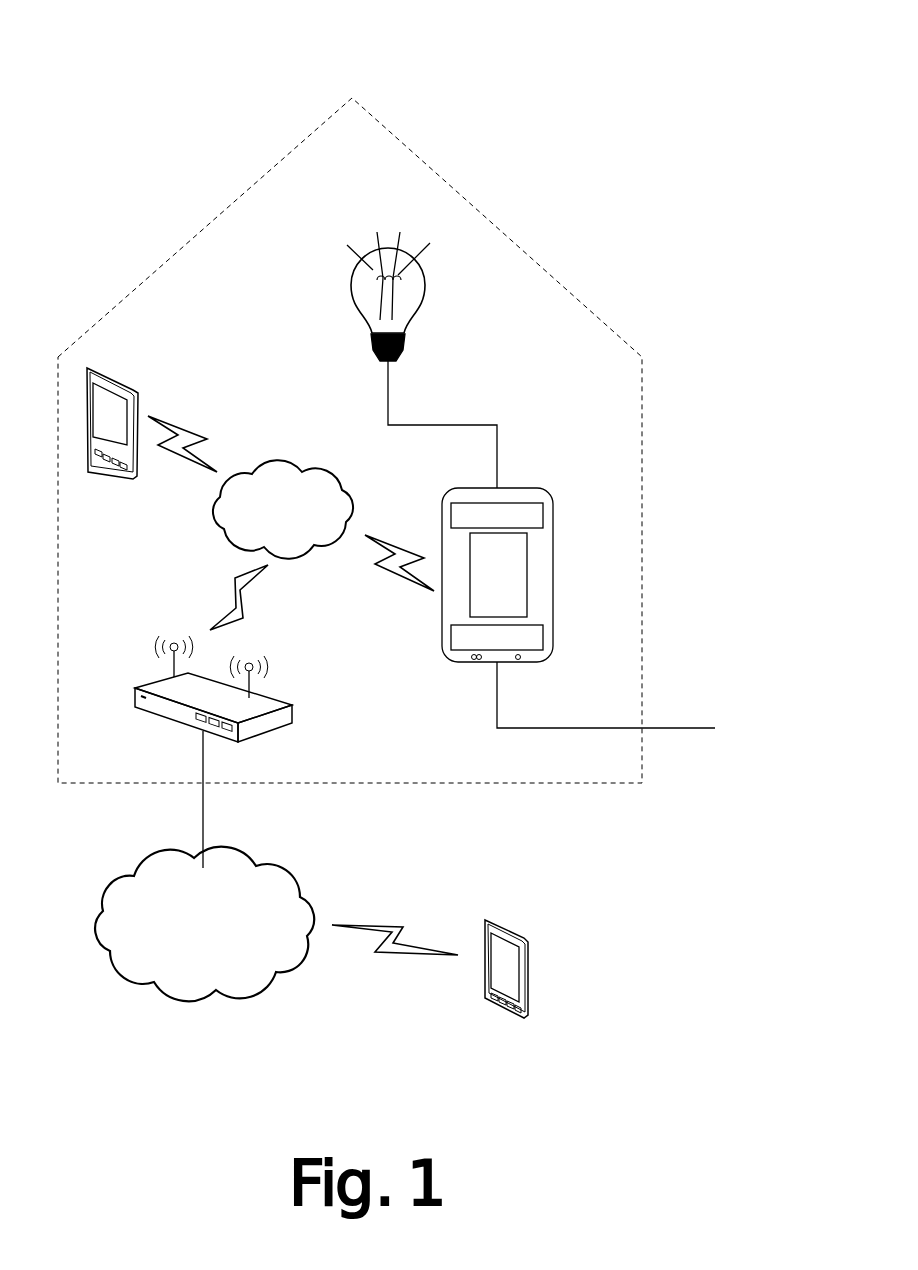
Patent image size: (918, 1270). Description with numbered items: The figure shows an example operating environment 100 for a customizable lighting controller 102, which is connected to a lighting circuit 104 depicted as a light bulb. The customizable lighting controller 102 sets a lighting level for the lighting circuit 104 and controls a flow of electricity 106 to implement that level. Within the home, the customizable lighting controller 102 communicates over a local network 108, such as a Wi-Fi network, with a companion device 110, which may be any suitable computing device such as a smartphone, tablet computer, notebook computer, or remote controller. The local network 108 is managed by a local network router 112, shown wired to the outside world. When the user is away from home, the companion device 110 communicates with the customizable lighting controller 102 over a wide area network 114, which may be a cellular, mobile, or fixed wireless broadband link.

The operating environment 100 is at (700, 52).
The customizable lighting controller 102 is at (525, 472).
The lighting circuit 104 is at (382, 220).
The flow of electricity 106 is at (693, 728).
The local network 108 is at (300, 518).
The companion device 110 is at (125, 352).
The local network router 112 is at (288, 686).
The wide area network 114 is at (215, 934).